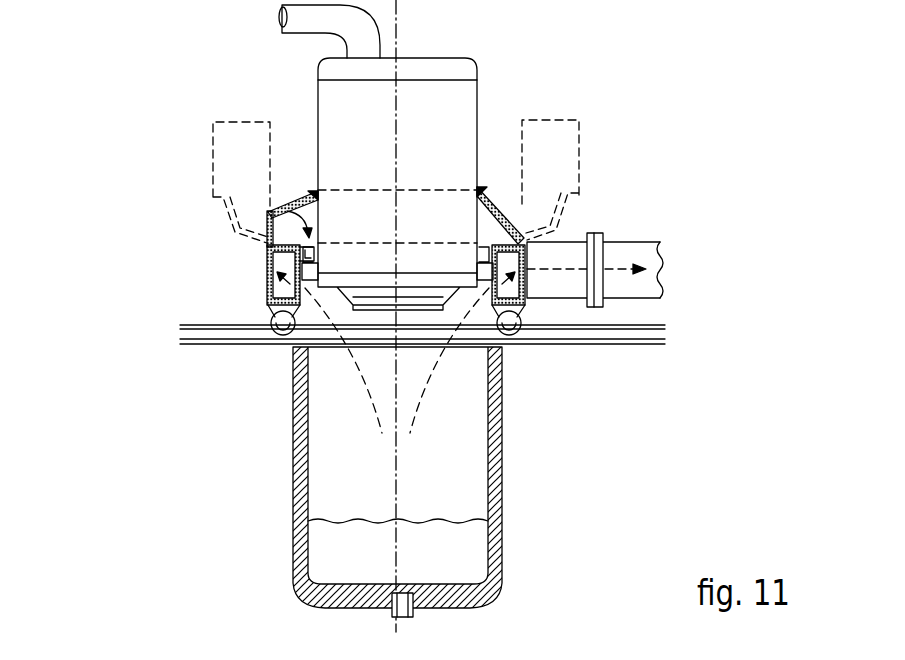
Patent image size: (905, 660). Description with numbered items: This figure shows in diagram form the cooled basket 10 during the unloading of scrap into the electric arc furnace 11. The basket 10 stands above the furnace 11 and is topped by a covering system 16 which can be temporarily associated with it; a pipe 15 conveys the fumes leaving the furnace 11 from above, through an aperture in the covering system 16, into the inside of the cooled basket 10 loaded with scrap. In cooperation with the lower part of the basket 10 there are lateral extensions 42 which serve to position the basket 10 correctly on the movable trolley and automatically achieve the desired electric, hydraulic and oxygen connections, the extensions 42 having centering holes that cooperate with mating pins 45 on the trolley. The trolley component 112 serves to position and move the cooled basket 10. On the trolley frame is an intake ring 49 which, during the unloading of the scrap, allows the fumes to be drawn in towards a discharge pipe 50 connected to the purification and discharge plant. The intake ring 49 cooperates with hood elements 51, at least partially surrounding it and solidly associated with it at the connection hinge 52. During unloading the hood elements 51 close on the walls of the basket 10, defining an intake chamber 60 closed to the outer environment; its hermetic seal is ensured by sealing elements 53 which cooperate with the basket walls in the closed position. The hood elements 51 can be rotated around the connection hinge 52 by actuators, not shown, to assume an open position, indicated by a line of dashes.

The cooled basket 10 is at (462, 102).
The electric arc furnace 11 is at (493, 482).
The pipe 15 is at (287, 30).
The covering system 16 is at (452, 62).
The lateral extensions 42 is at (268, 228).
The mating pins 45 is at (265, 253).
The intake ring 49 is at (528, 298).
The discharge pipe 50 is at (648, 287).
The hood elements 51 is at (490, 198).
The connection hinge 52 is at (596, 234).
The sealing elements 53 is at (305, 188).
The intake chamber 60 is at (278, 212).
The component of the movable trolley 112 is at (280, 316).